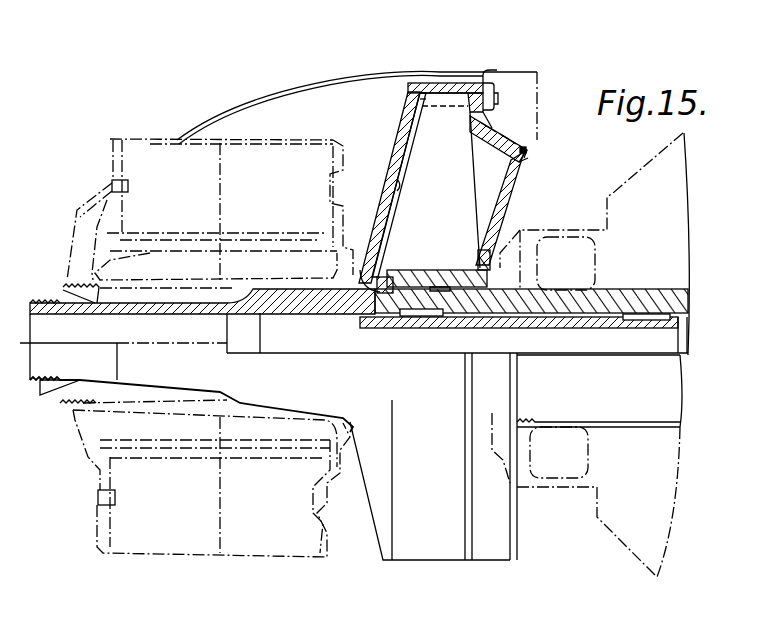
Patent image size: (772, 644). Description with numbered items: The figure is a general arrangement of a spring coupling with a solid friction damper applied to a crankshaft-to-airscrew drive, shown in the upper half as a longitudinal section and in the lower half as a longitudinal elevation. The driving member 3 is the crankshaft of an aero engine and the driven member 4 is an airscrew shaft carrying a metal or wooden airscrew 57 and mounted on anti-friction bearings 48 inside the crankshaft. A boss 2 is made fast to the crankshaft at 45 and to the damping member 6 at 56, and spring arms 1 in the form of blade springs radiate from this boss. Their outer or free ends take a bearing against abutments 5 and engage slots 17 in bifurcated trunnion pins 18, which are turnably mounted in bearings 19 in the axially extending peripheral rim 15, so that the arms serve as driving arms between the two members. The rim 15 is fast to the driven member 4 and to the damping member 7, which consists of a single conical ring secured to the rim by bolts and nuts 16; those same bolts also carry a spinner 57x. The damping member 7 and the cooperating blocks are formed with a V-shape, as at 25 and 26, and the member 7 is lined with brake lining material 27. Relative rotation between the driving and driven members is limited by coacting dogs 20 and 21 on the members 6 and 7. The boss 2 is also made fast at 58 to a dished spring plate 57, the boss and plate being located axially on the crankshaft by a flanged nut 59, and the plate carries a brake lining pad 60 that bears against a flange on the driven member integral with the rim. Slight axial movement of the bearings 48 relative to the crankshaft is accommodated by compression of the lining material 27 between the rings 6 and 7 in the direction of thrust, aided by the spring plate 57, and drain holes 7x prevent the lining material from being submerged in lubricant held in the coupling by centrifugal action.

The spring arms 1 is at (420, 141).
The boss 2 is at (421, 291).
The driving member 3 is at (593, 294).
The driven member 4 is at (300, 301).
The abutments 5 is at (434, 107).
The damping member 6 is at (521, 148).
The damping member 7 is at (528, 144).
The drain holes 7x is at (490, 131).
The peripheral rim 15 is at (408, 88).
The bolts and nuts 16 is at (494, 100).
The slots 17 is at (457, 91).
The trunnion pins 18 is at (494, 90).
The bearings 19 is at (420, 104).
The dog 20 is at (533, 163).
The dog 21 is at (531, 153).
The V-shape 25 is at (506, 122).
The V-shape 26 is at (529, 147).
The brake lining material 27 is at (530, 162).
The fastening of boss to crankshaft 45 is at (441, 292).
The anti-friction bearings 48 is at (420, 283).
The fastening of boss to damping member 56 is at (482, 262).
The dished spring plate 57 is at (118, 150).
The spinner 57x is at (357, 107).
The fastening of boss to spring plate 58 is at (391, 263).
The flanged nut 59 is at (378, 301).
The brake lining pad 60 is at (397, 185).